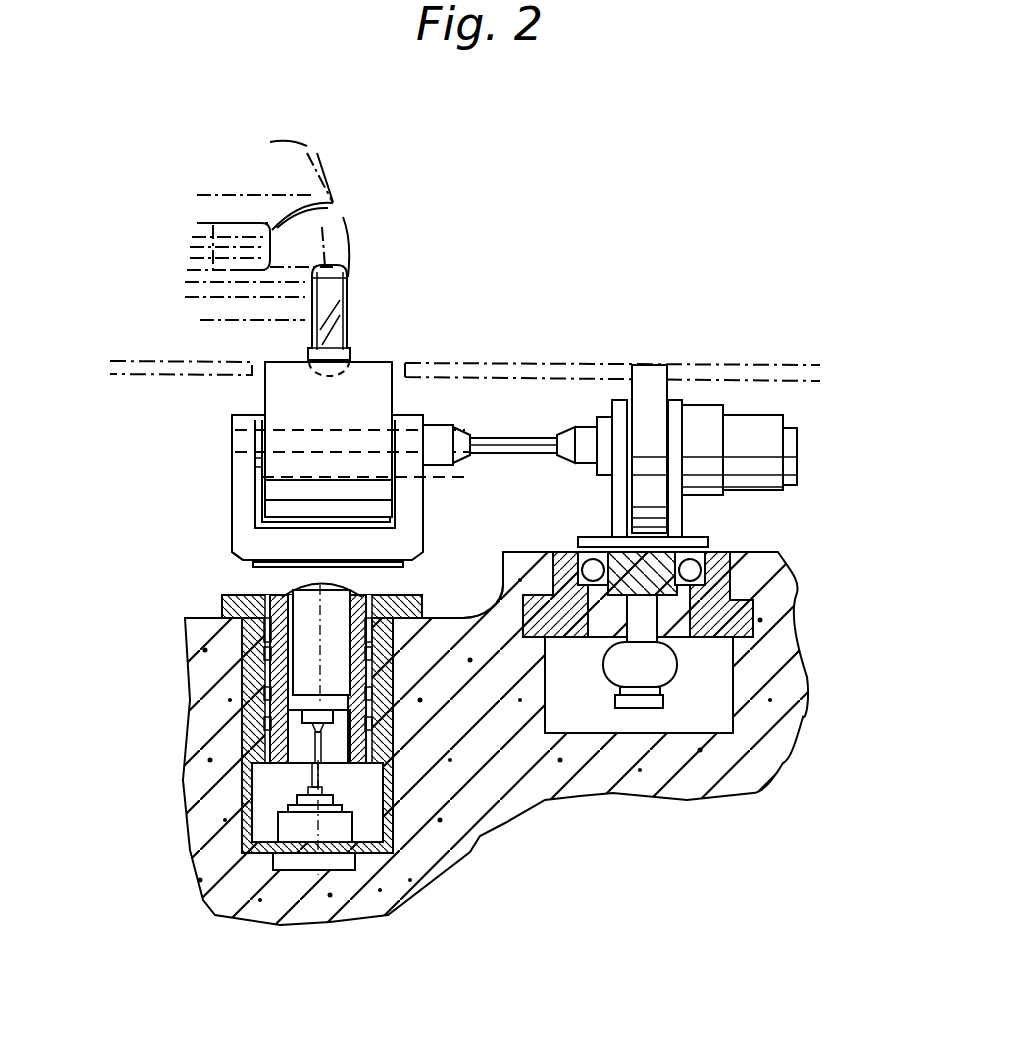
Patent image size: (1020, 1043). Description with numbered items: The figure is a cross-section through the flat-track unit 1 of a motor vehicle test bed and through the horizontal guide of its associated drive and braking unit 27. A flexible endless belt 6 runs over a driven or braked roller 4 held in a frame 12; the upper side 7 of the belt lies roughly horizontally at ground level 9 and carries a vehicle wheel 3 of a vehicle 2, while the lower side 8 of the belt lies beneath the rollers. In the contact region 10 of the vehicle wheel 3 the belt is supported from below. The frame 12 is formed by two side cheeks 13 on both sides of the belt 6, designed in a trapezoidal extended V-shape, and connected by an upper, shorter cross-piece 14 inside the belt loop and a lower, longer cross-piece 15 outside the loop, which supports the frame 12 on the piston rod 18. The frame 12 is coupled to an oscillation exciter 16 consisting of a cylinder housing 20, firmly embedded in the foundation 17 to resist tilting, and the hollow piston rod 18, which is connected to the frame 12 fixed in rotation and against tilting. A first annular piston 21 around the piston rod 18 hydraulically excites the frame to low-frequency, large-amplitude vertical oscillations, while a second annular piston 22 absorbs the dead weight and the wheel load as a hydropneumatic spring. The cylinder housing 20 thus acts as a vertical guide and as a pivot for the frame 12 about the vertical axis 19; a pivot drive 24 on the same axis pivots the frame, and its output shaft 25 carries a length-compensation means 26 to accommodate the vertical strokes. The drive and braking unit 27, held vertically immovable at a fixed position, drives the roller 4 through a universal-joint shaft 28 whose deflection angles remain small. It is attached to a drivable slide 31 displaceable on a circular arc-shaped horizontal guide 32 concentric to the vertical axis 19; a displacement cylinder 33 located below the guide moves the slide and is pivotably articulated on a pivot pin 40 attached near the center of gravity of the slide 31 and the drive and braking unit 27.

The flat-track unit 1 is at (400, 395).
The vehicle 2 is at (333, 203).
The vehicle wheel 3 is at (337, 330).
The driven or braked roller 4 is at (272, 392).
The flexible endless belt 6 is at (284, 357).
The upper side of the belt 7 is at (368, 356).
The lower side of the belt 8 is at (373, 530).
The ground level 9 is at (553, 360).
The contact region 10 is at (330, 374).
The frame 12 is at (230, 530).
The side cheeks 13 is at (233, 512).
The upper cross-piece 14 is at (430, 490).
The lower cross-piece 15 is at (308, 548).
The oscillation exciter 16 is at (427, 603).
The foundation 17 is at (218, 663).
The piston rod 18 is at (283, 595).
The vertical axis 19 is at (313, 868).
The cylinder housing 20 is at (253, 745).
The first annular piston 21 is at (222, 630).
The second annular piston 22 is at (263, 710).
The pivot drive 24 is at (290, 830).
The output shaft 25 is at (277, 773).
The length-compensation means 26 is at (322, 778).
The drive and braking unit 27 is at (673, 380).
The universal-joint shaft 28 is at (535, 456).
The slide 31 is at (693, 540).
The horizontal guide 32 is at (566, 618).
The displacement cylinder 33 is at (650, 673).
The pivot pin 40 is at (642, 618).